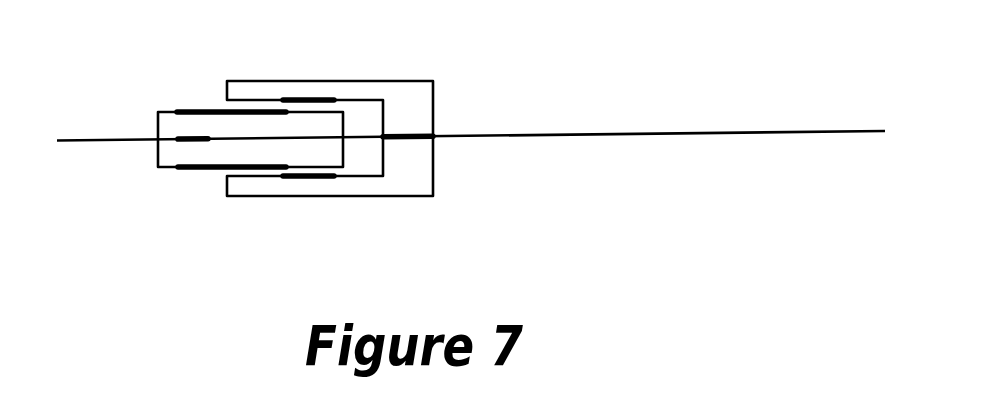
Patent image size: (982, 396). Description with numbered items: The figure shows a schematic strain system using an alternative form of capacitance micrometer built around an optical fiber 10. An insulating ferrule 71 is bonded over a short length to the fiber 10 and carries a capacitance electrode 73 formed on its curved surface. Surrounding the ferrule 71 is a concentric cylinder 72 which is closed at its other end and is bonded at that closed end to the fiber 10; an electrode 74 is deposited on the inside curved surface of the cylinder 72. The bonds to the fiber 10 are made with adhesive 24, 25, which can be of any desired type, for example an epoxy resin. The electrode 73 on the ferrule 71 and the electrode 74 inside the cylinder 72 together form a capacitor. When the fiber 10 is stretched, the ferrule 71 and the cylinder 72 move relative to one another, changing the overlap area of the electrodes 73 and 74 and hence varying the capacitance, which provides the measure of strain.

The fiber 10 is at (600, 134).
The adhesive 24 is at (173, 138).
The adhesive 25 is at (413, 136).
The insulating ferrule 71 is at (157, 162).
The concentric cylinder 72 is at (390, 196).
The capacitance electrode 73 is at (205, 110).
The electrode 74 is at (309, 99).